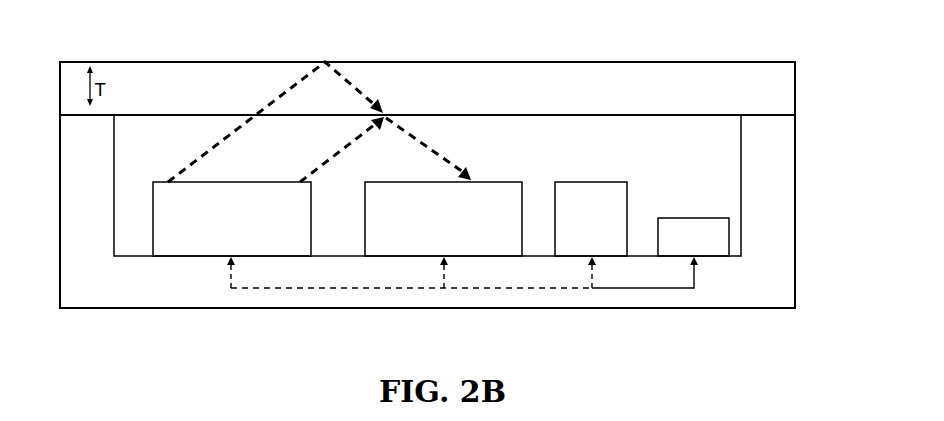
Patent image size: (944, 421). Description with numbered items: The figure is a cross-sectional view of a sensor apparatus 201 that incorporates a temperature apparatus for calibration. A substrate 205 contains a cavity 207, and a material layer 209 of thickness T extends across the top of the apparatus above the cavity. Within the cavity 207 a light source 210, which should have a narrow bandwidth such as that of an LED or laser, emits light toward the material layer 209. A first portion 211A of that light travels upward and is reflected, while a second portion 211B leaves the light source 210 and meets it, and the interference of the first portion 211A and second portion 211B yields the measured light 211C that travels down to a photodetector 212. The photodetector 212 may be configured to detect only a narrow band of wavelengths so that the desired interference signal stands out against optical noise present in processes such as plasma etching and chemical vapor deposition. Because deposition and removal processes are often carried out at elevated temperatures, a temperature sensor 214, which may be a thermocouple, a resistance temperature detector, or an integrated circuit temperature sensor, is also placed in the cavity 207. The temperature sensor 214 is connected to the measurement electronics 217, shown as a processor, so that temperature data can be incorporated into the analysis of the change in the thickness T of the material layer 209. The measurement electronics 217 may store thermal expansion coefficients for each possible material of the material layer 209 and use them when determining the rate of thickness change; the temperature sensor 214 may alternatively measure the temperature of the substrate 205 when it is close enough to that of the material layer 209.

The imaging device 201 is at (752, 13).
The substrate 205 is at (120, 298).
The cavity 207 is at (715, 165).
The material layer 209 is at (701, 100).
The light source 210 is at (249, 233).
The first portion of light 211A is at (275, 97).
The second portion of light 211B is at (328, 158).
The measured light 211C is at (428, 145).
The photodetector 212 is at (460, 233).
The temperature sensor 214 is at (591, 219).
The measurement electronics 217 is at (707, 257).